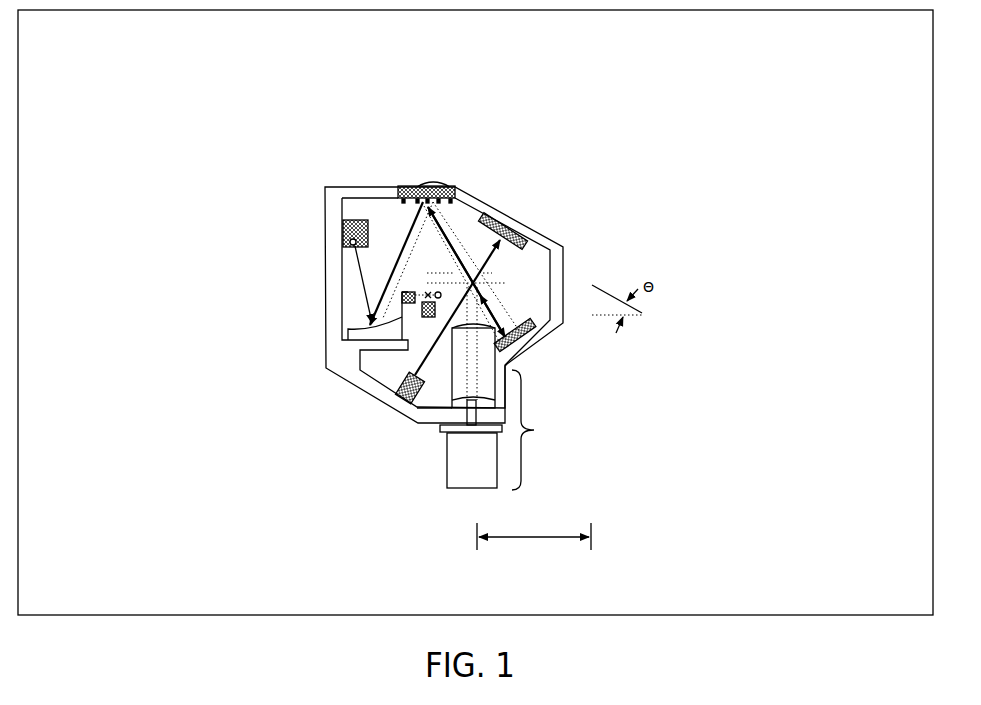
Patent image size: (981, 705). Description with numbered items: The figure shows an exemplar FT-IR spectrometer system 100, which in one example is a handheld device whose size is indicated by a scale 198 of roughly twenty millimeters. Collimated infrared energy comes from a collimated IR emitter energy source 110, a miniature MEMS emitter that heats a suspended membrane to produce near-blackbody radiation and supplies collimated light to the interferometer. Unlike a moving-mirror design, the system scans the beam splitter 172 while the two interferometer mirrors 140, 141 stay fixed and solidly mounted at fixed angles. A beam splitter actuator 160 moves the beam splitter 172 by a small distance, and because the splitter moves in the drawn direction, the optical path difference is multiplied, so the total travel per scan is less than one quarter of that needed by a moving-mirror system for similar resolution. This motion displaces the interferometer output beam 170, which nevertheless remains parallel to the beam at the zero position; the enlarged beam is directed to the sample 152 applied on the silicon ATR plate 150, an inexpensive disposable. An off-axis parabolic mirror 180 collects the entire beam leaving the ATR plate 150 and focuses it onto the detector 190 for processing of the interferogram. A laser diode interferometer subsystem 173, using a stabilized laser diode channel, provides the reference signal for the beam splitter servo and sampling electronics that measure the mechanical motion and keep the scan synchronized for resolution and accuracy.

The FT-IR spectrometer system 100 is at (444, 242).
The sample 152 is at (415, 182).
The ATR plate 150 is at (452, 184).
The detector 190 is at (343, 232).
The output beam 170 is at (447, 227).
The interferometer mirror 140 is at (515, 228).
The beam splitter 172 is at (502, 268).
The off-axis parabolic mirror 180 is at (348, 330).
The interferometer mirror 141 is at (535, 338).
The laser diode interferometer subsystem 173 is at (425, 316).
The collimated IR emitter energy source 110 is at (395, 403).
The beam splitter actuator 160 is at (554, 407).
The scale 198 is at (534, 531).